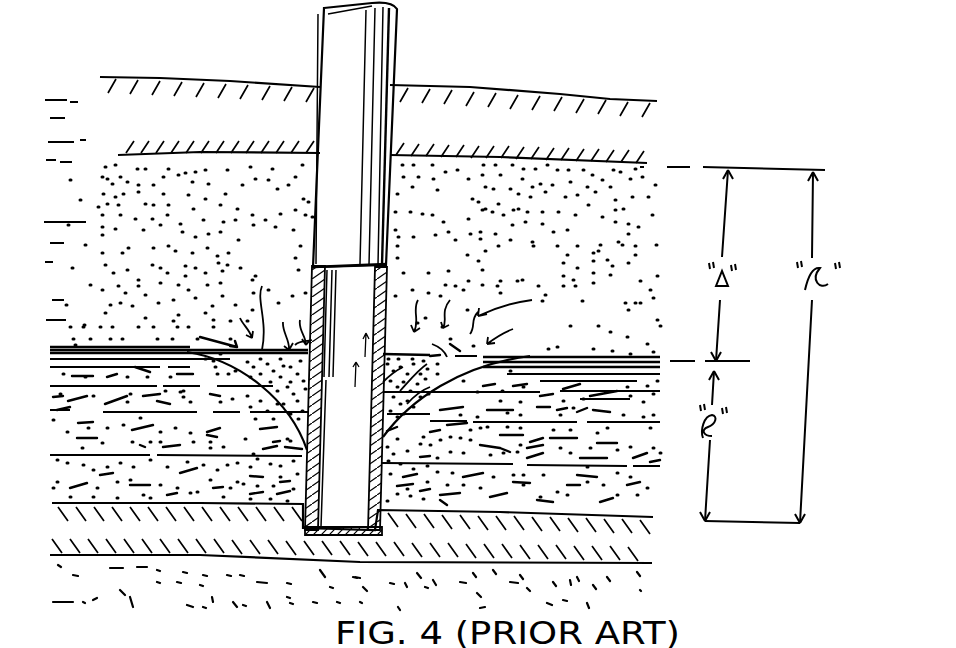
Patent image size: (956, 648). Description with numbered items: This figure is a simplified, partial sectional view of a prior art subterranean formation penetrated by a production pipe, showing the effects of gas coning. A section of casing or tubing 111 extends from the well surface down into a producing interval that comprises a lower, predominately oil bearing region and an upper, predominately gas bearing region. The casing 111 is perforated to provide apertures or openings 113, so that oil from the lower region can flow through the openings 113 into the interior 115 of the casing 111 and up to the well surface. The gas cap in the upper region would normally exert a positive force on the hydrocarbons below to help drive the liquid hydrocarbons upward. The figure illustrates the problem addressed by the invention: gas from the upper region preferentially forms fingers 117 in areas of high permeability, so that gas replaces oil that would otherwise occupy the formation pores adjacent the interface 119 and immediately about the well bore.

The casing 111 is at (397, 35).
The openings 113 is at (340, 407).
The interior 115 is at (378, 308).
The fingers 117 is at (276, 304).
The interface 119 is at (577, 356).